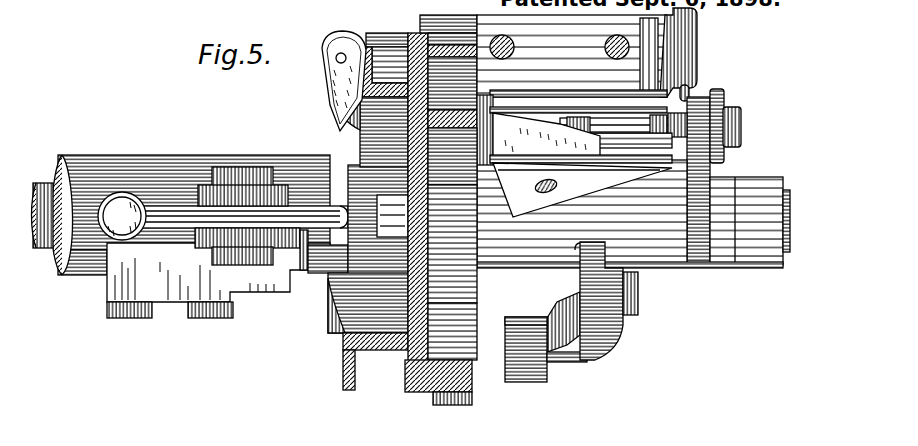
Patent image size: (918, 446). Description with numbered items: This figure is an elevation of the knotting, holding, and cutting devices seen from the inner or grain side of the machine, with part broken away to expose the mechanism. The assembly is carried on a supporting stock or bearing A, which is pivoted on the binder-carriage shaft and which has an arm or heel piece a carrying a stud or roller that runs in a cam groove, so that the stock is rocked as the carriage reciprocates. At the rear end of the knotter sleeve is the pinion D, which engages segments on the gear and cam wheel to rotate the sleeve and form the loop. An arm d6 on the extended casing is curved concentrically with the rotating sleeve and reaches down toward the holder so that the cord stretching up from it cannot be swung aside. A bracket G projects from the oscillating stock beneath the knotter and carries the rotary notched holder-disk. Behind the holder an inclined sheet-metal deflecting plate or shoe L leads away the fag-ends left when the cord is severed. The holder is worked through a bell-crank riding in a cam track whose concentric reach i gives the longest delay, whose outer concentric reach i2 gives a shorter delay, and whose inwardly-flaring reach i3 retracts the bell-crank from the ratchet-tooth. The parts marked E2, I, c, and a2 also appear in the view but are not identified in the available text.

The lever E2 is at (335, 88).
The pinion D is at (575, 48).
The arm d6 is at (692, 91).
The concentric reach i is at (452, 156).
The inwardly-flaring reach i3 is at (452, 244).
The block I is at (452, 331).
The outer concentric reach i2 is at (470, 350).
The wedge c is at (546, 135).
The bracket G is at (616, 141).
The deflecting plate or shoe L is at (581, 186).
The supporting stock or bearing A is at (633, 181).
The arm or heel piece a is at (606, 301).
The bracket block a2 is at (505, 385).